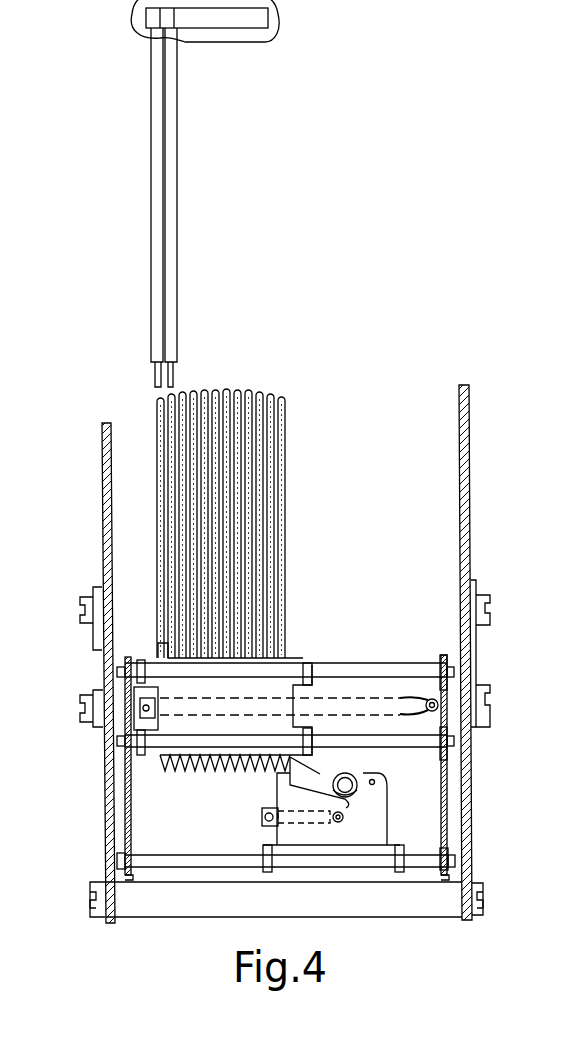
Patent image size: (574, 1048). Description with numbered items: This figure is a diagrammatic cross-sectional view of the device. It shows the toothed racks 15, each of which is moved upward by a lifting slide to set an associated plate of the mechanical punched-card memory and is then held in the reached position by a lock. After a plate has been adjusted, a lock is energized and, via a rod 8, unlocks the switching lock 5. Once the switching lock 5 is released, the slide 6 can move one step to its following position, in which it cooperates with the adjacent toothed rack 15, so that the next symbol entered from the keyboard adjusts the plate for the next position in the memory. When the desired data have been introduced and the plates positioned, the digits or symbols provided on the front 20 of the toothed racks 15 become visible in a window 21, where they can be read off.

The switching lock 5 is at (335, 843).
The slide 6 is at (283, 688).
The rod 8 is at (447, 793).
The toothed rack 15 is at (277, 470).
The front of the toothed racks 20 is at (154, 216).
The window 21 is at (248, 20).